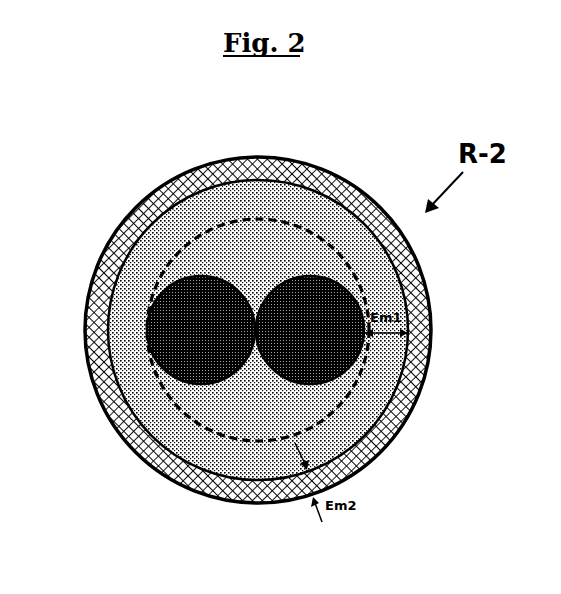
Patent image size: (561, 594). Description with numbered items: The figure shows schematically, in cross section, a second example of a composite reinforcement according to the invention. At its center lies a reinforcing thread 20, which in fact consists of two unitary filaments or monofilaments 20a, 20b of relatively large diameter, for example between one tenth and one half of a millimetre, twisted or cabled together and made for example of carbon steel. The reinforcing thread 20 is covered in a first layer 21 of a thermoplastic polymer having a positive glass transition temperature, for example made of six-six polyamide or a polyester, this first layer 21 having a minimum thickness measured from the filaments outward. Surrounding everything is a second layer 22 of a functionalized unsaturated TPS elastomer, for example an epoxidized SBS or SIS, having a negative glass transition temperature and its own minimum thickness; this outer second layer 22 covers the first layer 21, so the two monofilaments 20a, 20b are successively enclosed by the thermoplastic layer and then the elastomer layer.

The reinforcing thread 20 is at (242, 280).
The unitary filament 20a is at (311, 334).
The unitary filament 20b is at (200, 331).
The first layer 21 is at (223, 402).
The second layer 22 is at (130, 232).